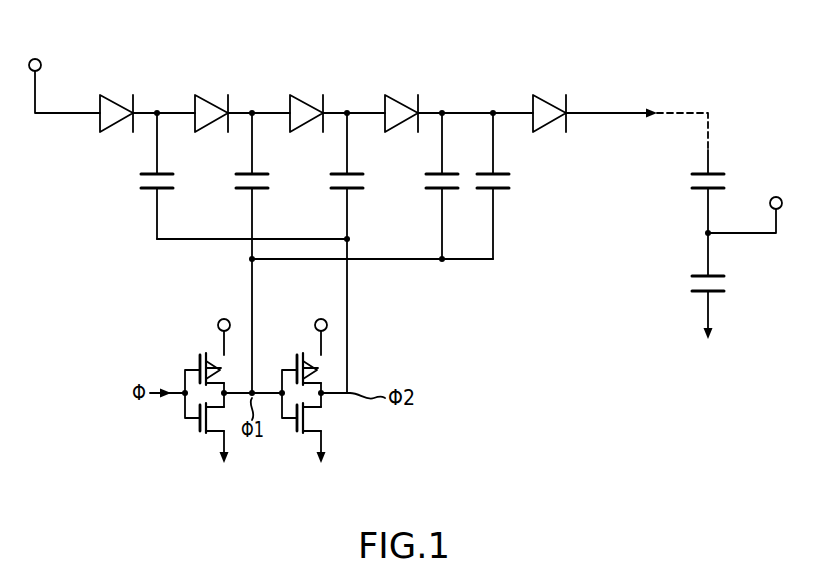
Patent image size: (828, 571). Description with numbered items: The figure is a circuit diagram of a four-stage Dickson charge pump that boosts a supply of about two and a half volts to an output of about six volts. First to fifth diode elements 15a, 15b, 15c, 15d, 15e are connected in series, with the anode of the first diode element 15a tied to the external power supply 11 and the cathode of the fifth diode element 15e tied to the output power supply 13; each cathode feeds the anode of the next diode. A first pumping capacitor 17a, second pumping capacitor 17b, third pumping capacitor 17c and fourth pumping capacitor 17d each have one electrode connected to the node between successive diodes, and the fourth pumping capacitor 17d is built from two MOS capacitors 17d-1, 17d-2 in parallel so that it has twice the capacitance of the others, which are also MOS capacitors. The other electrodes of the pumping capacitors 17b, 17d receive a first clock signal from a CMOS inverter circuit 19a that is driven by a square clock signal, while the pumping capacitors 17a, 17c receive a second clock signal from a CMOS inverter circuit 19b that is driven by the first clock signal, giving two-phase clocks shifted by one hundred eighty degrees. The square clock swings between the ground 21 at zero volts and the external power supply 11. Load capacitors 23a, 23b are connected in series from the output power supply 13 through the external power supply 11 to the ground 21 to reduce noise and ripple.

The external power supply 11 is at (35, 58).
The output power supply 13 is at (653, 105).
The first diode element 15a is at (115, 94).
The second diode element 15b is at (210, 94).
The third diode element 15c is at (305, 94).
The fourth diode element 15d is at (400, 94).
The fifth diode element 15e is at (548, 94).
The first pumping capacitor 17a is at (172, 193).
The second pumping capacitor 17b is at (267, 193).
The third pumping capacitor 17c is at (362, 193).
The fourth pumping capacitor 17d is at (521, 188).
The MOS capacitor 17d-1 is at (450, 195).
The MOS capacitor 17d-2 is at (500, 194).
The CMOS inverter circuit 19a is at (210, 394).
The CMOS inverter circuit 19b is at (310, 394).
The ground 21 is at (708, 346).
The load capacitor 23a is at (688, 178).
The load capacitor 23b is at (688, 287).